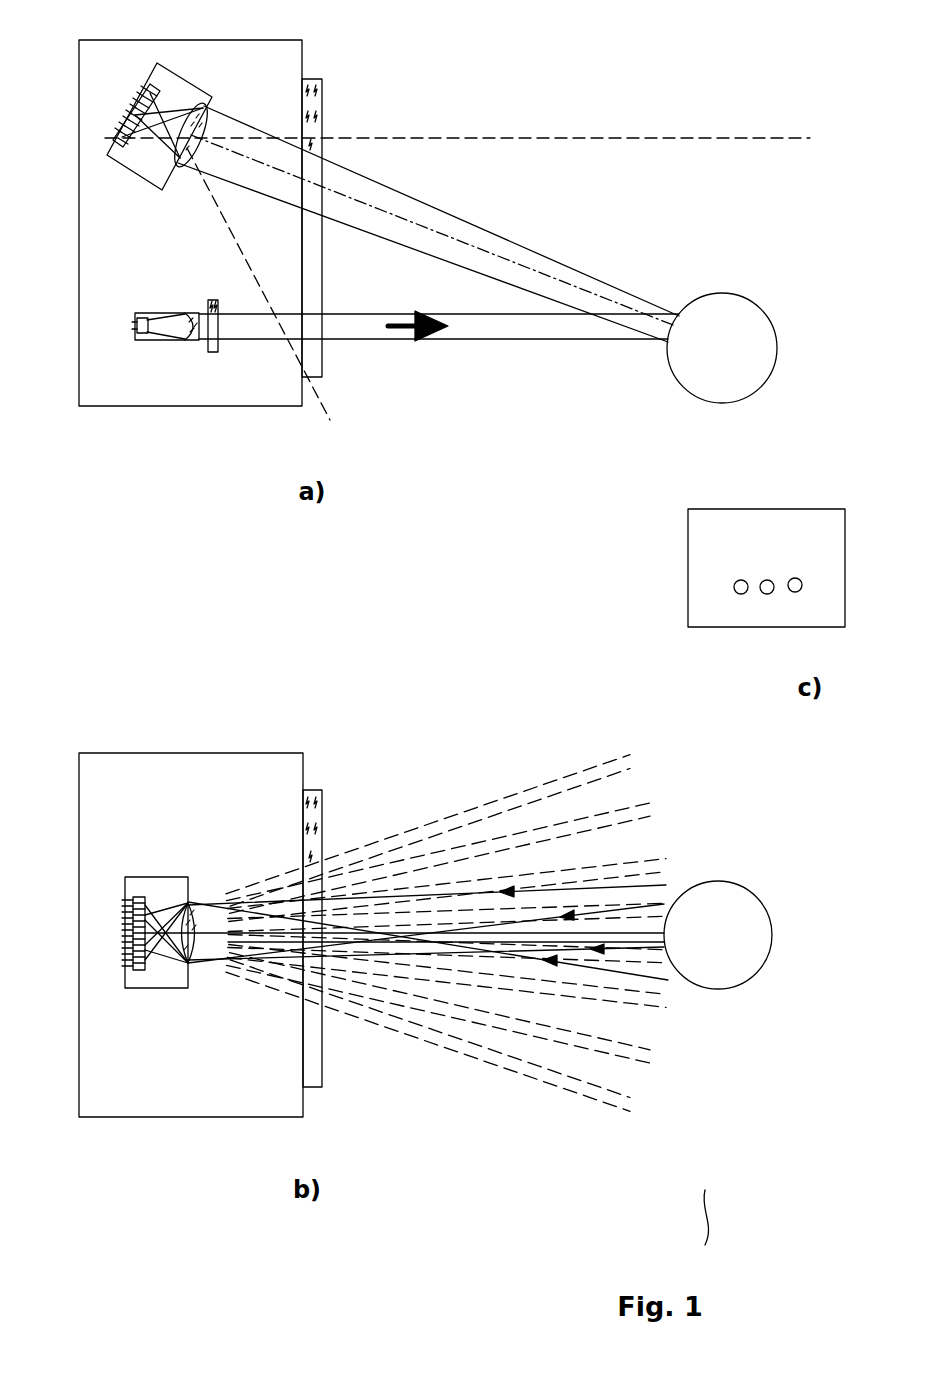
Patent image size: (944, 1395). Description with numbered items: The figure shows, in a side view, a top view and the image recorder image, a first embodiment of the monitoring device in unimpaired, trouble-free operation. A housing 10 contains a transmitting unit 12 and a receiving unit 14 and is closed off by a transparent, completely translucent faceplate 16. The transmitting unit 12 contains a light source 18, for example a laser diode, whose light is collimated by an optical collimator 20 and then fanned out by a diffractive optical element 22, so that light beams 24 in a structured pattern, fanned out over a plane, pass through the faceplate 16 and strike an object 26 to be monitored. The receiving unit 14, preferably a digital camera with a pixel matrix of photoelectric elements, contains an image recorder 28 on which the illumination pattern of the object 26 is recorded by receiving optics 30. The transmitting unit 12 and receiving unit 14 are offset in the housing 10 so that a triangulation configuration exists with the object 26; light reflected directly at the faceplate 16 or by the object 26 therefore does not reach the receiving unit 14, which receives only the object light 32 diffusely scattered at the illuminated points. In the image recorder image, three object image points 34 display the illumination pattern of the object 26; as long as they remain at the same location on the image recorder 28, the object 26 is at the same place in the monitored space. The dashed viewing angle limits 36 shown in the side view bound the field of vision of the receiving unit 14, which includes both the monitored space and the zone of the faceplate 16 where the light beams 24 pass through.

The housing 10 is at (79, 283).
The transmitting unit 12 is at (128, 384).
The receiving unit 14 is at (193, 66).
The faceplate 16 is at (320, 95).
The light source 18 is at (132, 323).
The optical collimator 20 is at (187, 343).
The diffractive optical element 22 is at (217, 352).
The light beams 24 is at (478, 323).
The object 26 is at (747, 345).
The image recorder 28 is at (114, 147).
The receiving optics 30 is at (128, 184).
The object light 32 is at (502, 243).
The object image points 34 is at (795, 592).
The reference axis 36 is at (408, 137).